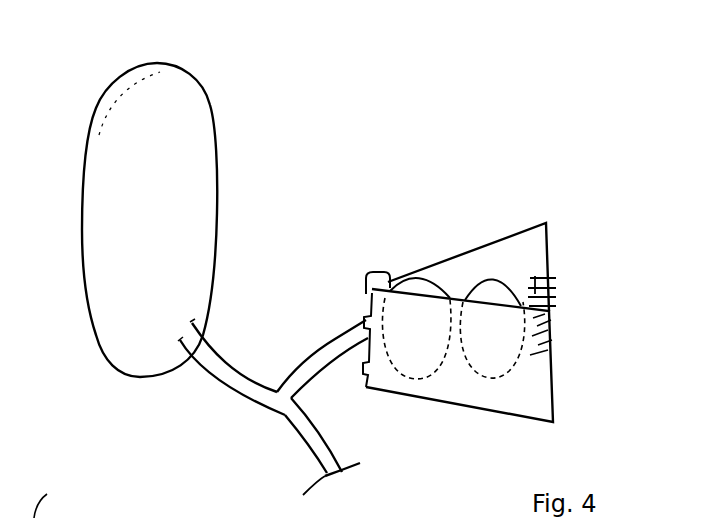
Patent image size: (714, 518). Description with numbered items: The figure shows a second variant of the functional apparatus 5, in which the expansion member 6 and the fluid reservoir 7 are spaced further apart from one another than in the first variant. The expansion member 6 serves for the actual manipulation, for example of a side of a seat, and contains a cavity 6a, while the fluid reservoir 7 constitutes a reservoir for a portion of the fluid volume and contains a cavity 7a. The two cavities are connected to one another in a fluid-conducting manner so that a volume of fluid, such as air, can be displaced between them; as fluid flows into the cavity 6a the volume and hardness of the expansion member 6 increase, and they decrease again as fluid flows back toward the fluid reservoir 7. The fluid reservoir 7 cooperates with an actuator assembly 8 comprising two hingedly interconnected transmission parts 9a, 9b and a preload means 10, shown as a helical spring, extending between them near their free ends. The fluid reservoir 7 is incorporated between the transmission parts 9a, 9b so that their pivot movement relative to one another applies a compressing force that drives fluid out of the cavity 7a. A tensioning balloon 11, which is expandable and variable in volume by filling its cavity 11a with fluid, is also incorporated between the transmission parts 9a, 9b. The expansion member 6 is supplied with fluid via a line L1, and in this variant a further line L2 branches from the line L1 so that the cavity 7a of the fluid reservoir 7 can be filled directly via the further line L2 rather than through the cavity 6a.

The functional apparatus 5 is at (269, 247).
The expansion member 6 is at (110, 83).
The cavity of the expansion member 6a is at (124, 218).
The fluid reservoir 7 is at (438, 283).
The cavity of the fluid reservoir 7a is at (416, 346).
The actuator assembly 8 is at (496, 251).
The transmission part 9a is at (518, 228).
The transmission part 9b is at (540, 392).
The preload means 10 is at (557, 287).
The tensioning balloon 11 is at (493, 358).
The cavity of the tensioning balloon 11a is at (496, 292).
The line L1 is at (221, 390).
The further line L2 is at (307, 343).